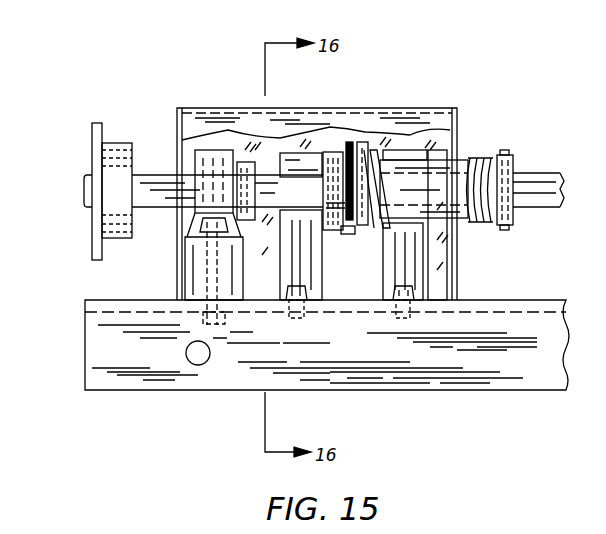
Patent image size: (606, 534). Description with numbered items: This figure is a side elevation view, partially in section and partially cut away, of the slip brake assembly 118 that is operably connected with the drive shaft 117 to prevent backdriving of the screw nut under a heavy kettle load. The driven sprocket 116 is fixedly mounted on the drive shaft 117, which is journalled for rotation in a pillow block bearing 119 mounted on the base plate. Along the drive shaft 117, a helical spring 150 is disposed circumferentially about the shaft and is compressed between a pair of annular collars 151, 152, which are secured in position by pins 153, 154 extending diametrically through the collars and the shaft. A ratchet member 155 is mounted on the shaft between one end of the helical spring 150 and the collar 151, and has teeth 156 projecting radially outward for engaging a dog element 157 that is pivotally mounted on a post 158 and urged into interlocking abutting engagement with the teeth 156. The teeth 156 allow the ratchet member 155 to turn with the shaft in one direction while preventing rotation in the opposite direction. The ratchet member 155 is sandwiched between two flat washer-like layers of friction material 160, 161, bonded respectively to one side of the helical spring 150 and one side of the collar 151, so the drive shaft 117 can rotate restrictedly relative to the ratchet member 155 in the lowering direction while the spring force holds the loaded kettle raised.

The driven sprocket 116 is at (96, 238).
The drive shaft 117 is at (172, 197).
The slip brake assembly 118 is at (467, 152).
The pillow block bearing 119 is at (182, 110).
The helical spring 150 is at (470, 220).
The annular collar 151 is at (327, 213).
The annular collar 152 is at (513, 222).
The pin 153 is at (333, 142).
The pin 154 is at (505, 150).
The ratchet member 155 is at (337, 122).
The teeth 156 is at (331, 215).
The dog element 157 is at (350, 148).
The post 158 is at (212, 162).
The friction material layer 160 is at (334, 234).
The friction material layer 161 is at (372, 150).